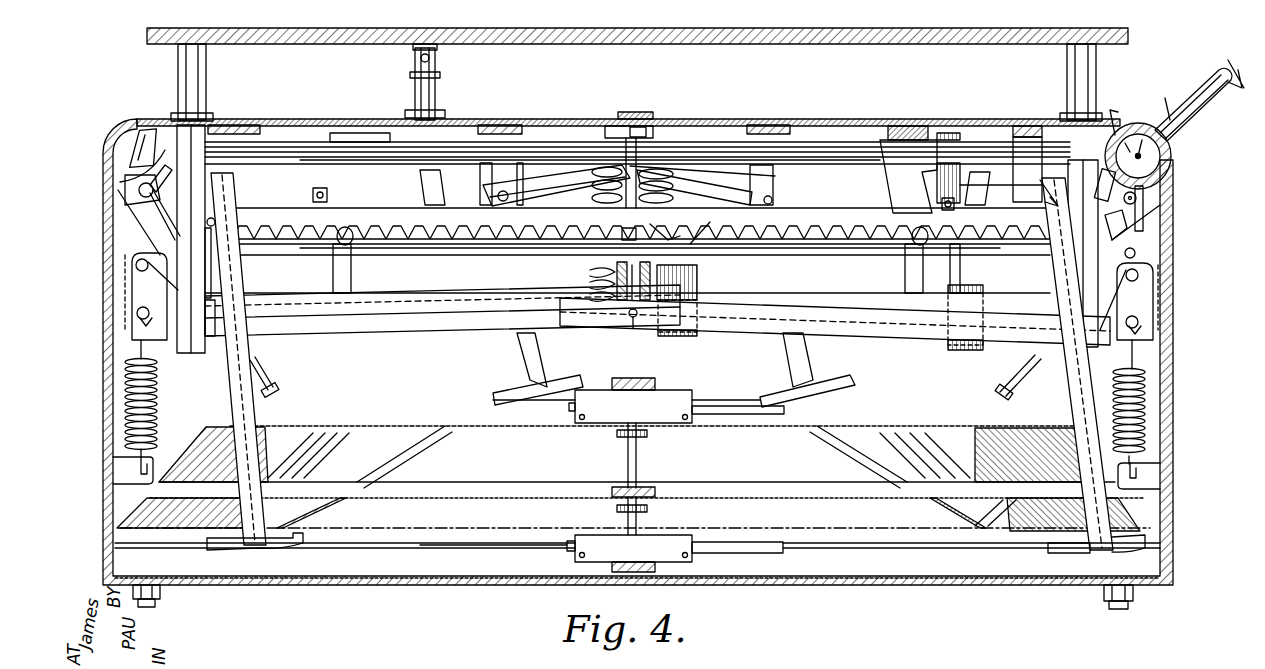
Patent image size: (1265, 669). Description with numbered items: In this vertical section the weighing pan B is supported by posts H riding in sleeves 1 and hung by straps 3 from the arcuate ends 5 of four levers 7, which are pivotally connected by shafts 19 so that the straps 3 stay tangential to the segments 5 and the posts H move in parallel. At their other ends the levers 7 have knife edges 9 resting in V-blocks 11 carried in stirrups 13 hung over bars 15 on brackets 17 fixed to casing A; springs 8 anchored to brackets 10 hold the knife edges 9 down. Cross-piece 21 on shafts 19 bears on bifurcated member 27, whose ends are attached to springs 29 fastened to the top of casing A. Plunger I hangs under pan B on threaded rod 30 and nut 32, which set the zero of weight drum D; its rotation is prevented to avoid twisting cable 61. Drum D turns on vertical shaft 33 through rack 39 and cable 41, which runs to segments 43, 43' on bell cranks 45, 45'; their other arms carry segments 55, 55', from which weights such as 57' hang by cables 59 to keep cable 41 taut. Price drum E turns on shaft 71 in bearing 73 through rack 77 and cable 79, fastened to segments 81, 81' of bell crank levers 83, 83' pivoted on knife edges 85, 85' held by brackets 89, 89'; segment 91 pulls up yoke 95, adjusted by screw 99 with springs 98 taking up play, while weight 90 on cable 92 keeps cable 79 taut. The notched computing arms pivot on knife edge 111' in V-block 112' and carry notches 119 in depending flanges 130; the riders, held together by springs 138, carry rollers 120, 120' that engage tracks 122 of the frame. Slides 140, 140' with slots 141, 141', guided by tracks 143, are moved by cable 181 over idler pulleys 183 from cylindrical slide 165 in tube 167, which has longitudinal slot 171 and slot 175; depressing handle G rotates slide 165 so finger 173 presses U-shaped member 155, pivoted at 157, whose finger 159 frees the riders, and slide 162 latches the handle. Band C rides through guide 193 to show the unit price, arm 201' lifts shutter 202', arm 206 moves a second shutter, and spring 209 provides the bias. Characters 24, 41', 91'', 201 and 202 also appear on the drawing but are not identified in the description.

The sleeves 1 is at (213, 117).
The straps 3 is at (215, 272).
The arcuate ends 5 is at (216, 325).
The levers 7 is at (418, 330).
The springs 8 is at (128, 383).
The knife edges 9 is at (137, 316).
The brackets 10 is at (125, 465).
The V-blocks 11 is at (142, 330).
The stirrups 13 is at (160, 290).
The bars 15 is at (136, 265).
The brackets 17 is at (120, 275).
The shafts 19 is at (631, 328).
The cross-piece 21 is at (628, 292).
The block 24 is at (1118, 257).
The bifurcated member 27 is at (603, 288).
The springs 29 is at (676, 194).
The threaded rod 30 is at (412, 54).
The nut 32 is at (438, 62).
The vertical shaft 33 is at (640, 528).
The rack 39 is at (728, 553).
The operating cable 41 is at (637, 556).
The rod 41' is at (493, 558).
The segment 43 is at (260, 549).
The segment 43' is at (1086, 552).
The bell crank 45 is at (252, 359).
The bell crank 45' is at (1070, 364).
The segment 55 is at (443, 188).
The segment 55' is at (995, 228).
The weight 57' is at (953, 331).
The cable 59 is at (975, 272).
The cable 61 is at (422, 190).
The vertical shaft 71 is at (637, 452).
The bearing 73 is at (640, 488).
The rack 77 is at (785, 410).
The cable 79 is at (745, 398).
The segment 81 is at (521, 387).
The segment 81' is at (821, 391).
The bell crank lever 83 is at (547, 360).
The bell crank lever 83' is at (814, 360).
The knife edge 85 is at (556, 185).
The knife edge 85' is at (711, 185).
The bracket 89 is at (625, 116).
The bracket 89' is at (702, 177).
The weight 90 is at (690, 290).
The segment 91 is at (673, 186).
The spring 91'' is at (712, 225).
The cable 92 is at (690, 275).
The yoke 95 is at (630, 230).
The springs 98 is at (666, 224).
The screw 99 is at (645, 172).
The knife edge 111' is at (242, 214).
The V-block 112' is at (191, 263).
The notches 119 is at (492, 240).
The rollers 120 is at (323, 250).
The rollers 120' is at (889, 224).
The tracks 122 is at (470, 238).
The depending flanges 130 is at (560, 222).
The springs 138 is at (313, 195).
The slide 140 is at (360, 116).
The slide 140' is at (960, 150).
The slots 141 is at (363, 268).
The slots 141' is at (893, 268).
The tracks 143 is at (300, 160).
The U-shaped member 155 is at (1133, 218).
The pivot 157 is at (1143, 250).
The finger 159 is at (165, 202).
The slide 162 is at (1168, 96).
The cylindrical slide 165 is at (1128, 146).
The tube 167 is at (1108, 125).
The longitudinal slot 171 is at (1172, 154).
The finger 173 is at (1140, 199).
The slot 175 is at (1138, 161).
The continuous cable 181 is at (290, 153).
The idler pulleys 183 is at (124, 196).
The guide 193 is at (124, 188).
The rod 201 is at (1005, 375).
The arm 201' is at (288, 371).
The stop 202 is at (991, 402).
The shutter 202' is at (303, 387).
The arm 206 is at (162, 175).
The spring 209 is at (165, 128).
The casing A is at (728, 122).
The weighing pan B is at (654, 44).
The band C is at (125, 158).
The weight drum D is at (633, 514).
The price drum E is at (637, 457).
The price adjustment handle G is at (1215, 88).
The posts H is at (207, 68).
The plunger I is at (410, 76).